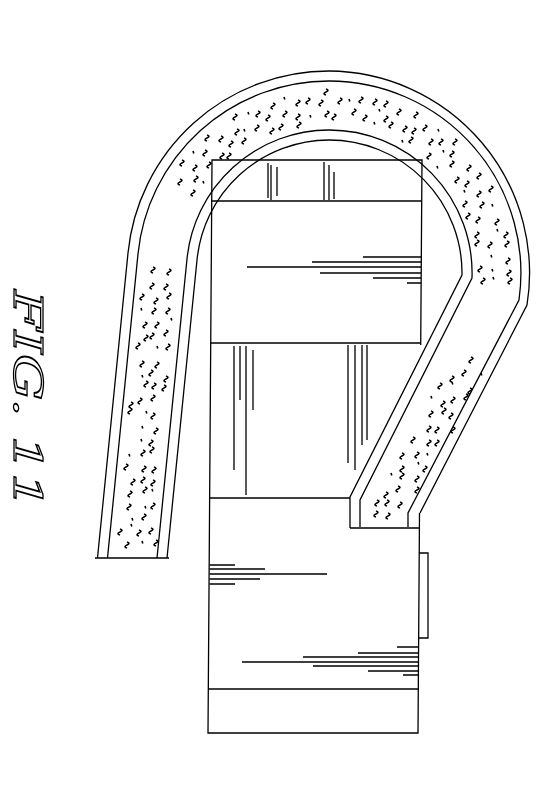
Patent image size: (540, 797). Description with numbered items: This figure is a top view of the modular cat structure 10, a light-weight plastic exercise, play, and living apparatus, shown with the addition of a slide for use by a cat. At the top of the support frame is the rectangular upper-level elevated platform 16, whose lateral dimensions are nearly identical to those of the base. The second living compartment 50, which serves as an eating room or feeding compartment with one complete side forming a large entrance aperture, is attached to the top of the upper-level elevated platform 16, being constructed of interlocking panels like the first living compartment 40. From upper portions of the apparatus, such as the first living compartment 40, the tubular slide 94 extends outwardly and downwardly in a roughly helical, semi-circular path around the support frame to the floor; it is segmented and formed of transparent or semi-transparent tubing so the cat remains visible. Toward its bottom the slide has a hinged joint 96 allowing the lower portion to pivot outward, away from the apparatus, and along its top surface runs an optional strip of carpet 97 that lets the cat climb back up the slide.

The modular structure 10 is at (487, 503).
The upper-level elevated platform 16 is at (222, 477).
The first living compartment 40 is at (414, 657).
The second living compartment 50 is at (244, 242).
The tubular slide 94 is at (399, 101).
The hinged joint 96 is at (190, 301).
The strip of carpet 97 is at (287, 97).